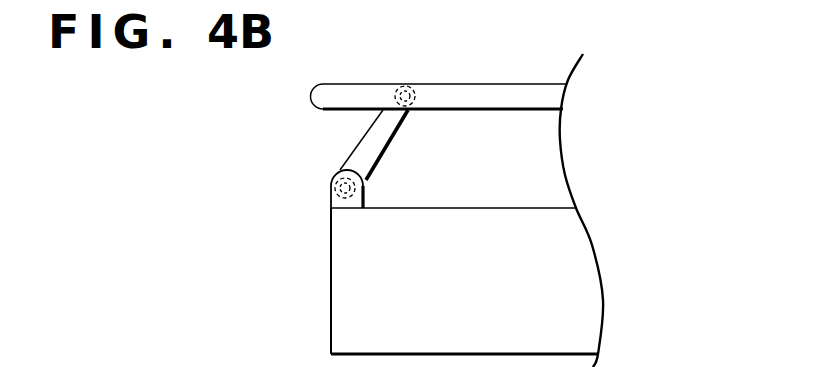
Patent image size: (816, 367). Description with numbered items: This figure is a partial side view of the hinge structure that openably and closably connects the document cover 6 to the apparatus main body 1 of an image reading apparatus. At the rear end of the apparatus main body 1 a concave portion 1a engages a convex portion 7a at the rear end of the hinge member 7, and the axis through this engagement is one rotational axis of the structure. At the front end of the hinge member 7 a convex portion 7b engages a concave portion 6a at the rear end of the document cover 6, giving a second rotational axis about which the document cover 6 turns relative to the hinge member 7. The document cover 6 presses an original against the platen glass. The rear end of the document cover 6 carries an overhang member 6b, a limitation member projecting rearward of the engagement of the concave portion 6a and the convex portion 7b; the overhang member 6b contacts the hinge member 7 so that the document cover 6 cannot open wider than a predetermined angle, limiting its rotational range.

The apparatus main body 1 is at (370, 282).
The concave portion 1a is at (290, 191).
The document cover 6 is at (538, 83).
The concave portion 6a is at (451, 59).
The overhang member 6b is at (361, 86).
The hinge member 7 is at (366, 132).
The convex portion 7a is at (336, 184).
The convex portion 7b is at (409, 87).